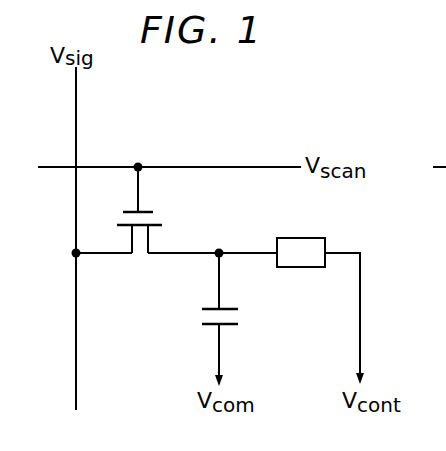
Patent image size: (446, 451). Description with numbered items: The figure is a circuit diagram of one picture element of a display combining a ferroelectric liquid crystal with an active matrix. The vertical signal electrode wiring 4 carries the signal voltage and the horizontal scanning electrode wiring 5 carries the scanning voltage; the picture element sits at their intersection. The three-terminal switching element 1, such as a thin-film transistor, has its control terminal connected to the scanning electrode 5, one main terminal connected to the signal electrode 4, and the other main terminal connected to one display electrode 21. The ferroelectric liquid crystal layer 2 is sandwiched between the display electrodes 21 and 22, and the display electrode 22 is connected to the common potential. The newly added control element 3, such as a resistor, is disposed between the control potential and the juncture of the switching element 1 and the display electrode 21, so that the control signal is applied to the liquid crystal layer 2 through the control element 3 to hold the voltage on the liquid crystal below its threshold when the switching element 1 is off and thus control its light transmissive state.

The three-terminal switching element 1 is at (163, 219).
The ferroelectric liquid crystal layer 2 is at (216, 319).
The display electrode 21 is at (230, 308).
The display electrode 22 is at (230, 326).
The control element 3 is at (310, 237).
The signal electrode wiring 4 is at (77, 129).
The scanning electrode wiring 5 is at (197, 165).